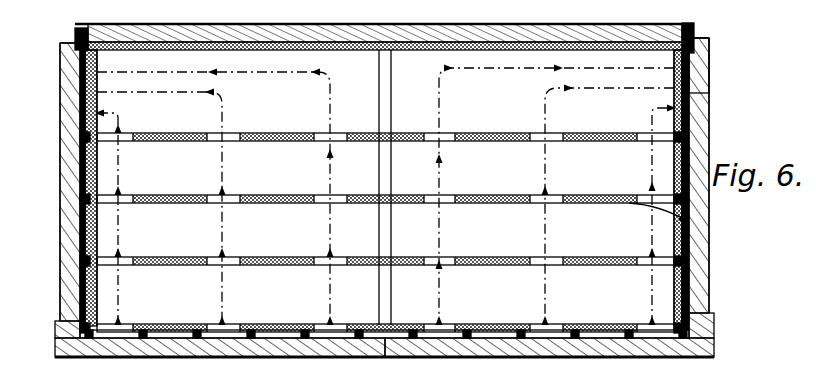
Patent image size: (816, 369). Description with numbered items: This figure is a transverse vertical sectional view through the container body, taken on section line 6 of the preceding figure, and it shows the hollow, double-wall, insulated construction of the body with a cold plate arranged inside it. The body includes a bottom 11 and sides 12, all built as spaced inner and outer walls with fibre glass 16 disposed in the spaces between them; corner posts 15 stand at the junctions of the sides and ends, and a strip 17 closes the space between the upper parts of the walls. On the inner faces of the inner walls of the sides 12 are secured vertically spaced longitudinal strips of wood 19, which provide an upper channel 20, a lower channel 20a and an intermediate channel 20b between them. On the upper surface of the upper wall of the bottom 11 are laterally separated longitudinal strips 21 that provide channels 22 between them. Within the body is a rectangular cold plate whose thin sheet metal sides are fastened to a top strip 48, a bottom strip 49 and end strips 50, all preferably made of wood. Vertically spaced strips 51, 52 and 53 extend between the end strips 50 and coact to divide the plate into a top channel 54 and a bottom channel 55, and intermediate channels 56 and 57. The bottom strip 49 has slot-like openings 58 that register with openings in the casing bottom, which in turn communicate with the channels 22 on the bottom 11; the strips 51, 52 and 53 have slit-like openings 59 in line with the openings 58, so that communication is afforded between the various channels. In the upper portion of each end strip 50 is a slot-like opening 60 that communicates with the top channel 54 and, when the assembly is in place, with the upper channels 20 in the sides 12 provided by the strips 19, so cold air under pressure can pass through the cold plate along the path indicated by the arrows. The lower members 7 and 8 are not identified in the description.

The section line 6 is at (385, 360).
The bottom slab 7 is at (202, 344).
The bottom slab corner 8 is at (565, 341).
The bottom 11 is at (478, 358).
The side 12 is at (58, 72).
The corner post 15 is at (505, 360).
The fibre glass insulation 16 is at (711, 67).
The strip 17 is at (62, 43).
The longitudinal wooden strip 19 is at (60, 146).
The upper channel 20 is at (82, 103).
The lower channel 20a is at (731, 277).
The intermediate channel 20b is at (688, 166).
The longitudinal strip 21 is at (287, 327).
The channel 22 is at (535, 329).
The top strip 48 is at (426, 42).
The bottom strip 49 is at (404, 325).
The end strip 50 is at (97, 290).
The vertically spaced strip 51 is at (277, 257).
The vertically spaced strip 52 is at (277, 195).
The vertically spaced strip 53 is at (283, 133).
The top channel 54 is at (494, 128).
The bottom channel 55 is at (349, 279).
The intermediate channel 56 is at (499, 183).
The intermediate channel 57 is at (606, 251).
The slot-like opening 58 is at (644, 321).
The slit-like opening 59 is at (210, 197).
The slot-like opening 60 is at (123, 211).